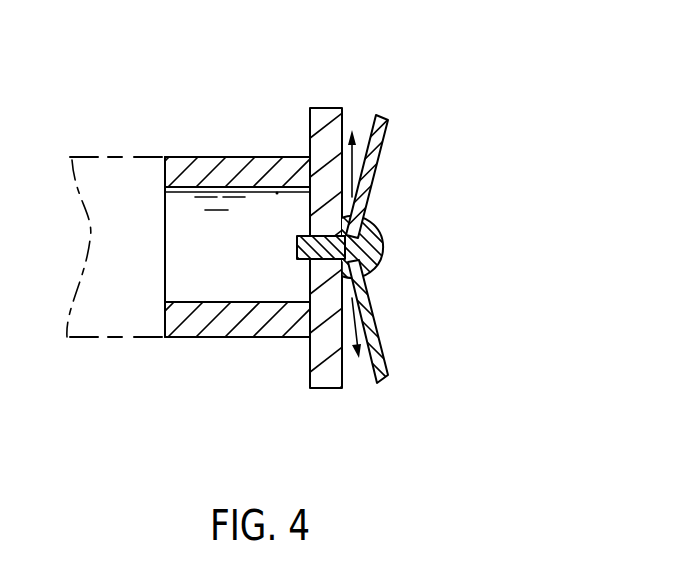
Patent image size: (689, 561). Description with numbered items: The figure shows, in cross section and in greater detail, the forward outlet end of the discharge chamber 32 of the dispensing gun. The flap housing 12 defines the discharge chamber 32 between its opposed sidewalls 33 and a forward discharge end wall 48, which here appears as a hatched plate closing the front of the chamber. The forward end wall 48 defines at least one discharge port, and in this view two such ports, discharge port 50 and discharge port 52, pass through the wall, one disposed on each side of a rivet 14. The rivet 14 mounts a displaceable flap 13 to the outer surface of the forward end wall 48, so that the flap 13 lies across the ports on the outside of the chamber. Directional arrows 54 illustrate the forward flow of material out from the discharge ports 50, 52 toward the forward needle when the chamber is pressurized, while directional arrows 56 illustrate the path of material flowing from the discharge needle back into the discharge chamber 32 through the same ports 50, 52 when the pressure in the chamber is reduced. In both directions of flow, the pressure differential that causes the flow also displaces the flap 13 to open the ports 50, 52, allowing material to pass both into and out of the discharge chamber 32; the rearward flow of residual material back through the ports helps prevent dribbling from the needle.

The flap housing 12 is at (206, 272).
The displaceable flap 13 is at (385, 363).
The rivet 14 is at (392, 249).
The discharge chamber 32 is at (141, 267).
The opposed sidewalls 33 is at (205, 157).
The forward discharge end wall 48 is at (322, 108).
The discharge port 50 is at (272, 212).
The discharge port 52 is at (283, 286).
The directional arrows 54 is at (402, 256).
The directional arrows 56 is at (366, 100).